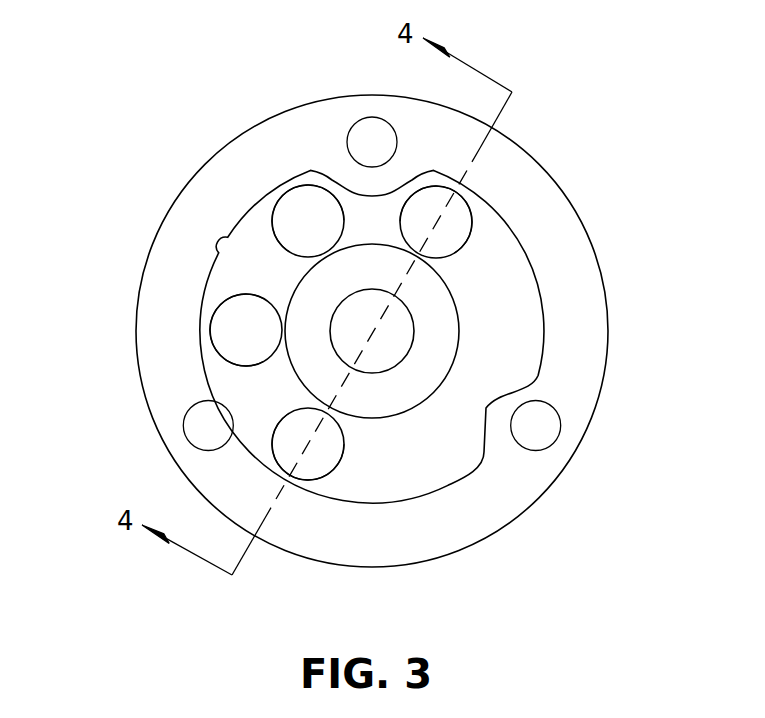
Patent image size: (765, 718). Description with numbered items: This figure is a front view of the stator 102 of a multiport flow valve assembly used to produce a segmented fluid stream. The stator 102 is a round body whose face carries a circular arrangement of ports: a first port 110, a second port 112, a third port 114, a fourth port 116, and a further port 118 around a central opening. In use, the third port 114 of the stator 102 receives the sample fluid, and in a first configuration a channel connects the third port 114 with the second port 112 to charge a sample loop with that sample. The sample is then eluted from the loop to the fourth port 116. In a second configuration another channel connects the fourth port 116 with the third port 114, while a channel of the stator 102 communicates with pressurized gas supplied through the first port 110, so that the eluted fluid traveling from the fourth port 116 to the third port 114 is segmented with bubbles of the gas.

The stator 102 is at (513, 142).
The first port 110 is at (400, 337).
The second port 112 is at (313, 467).
The third port 114 is at (228, 333).
The fourth port 116 is at (285, 222).
The aperture 118 is at (460, 222).